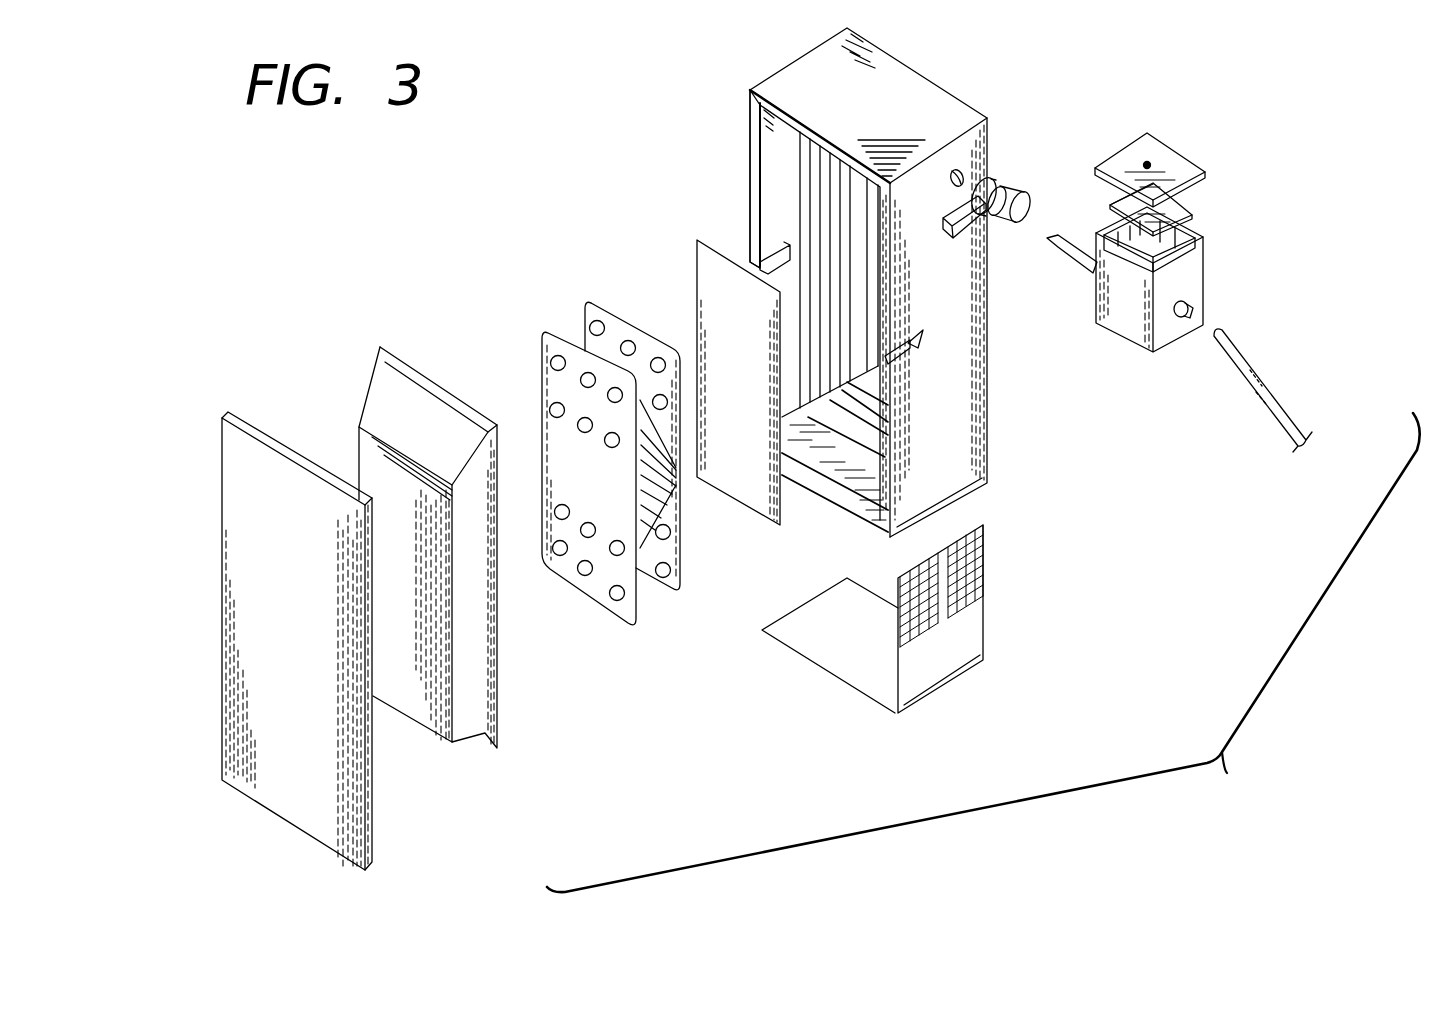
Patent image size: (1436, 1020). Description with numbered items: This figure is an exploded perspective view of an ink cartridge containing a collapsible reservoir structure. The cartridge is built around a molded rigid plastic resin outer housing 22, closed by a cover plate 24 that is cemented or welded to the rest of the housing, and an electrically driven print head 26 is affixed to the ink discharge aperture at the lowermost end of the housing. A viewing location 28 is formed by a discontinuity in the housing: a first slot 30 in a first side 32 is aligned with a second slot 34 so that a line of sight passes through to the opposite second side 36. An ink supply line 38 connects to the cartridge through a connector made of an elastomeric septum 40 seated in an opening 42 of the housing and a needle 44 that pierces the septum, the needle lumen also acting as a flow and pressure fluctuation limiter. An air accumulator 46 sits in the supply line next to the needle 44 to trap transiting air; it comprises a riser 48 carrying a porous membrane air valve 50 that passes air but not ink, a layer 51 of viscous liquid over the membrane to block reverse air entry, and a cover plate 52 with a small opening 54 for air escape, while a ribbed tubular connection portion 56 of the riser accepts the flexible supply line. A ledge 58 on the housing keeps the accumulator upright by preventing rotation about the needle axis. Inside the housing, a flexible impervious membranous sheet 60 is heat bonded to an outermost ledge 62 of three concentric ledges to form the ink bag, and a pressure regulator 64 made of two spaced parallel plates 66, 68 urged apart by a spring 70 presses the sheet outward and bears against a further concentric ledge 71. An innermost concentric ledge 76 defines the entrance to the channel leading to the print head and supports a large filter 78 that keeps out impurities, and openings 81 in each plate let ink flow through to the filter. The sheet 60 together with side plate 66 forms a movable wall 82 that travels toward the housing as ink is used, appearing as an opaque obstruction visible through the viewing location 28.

The outer housing 22 is at (874, 287).
The cover plate 24 is at (228, 440).
The print head 26 is at (978, 620).
The viewing location 28 is at (913, 362).
The first slot 30 is at (917, 342).
The first side 32 is at (977, 445).
The second slot 34 is at (770, 258).
The second side 36 is at (750, 118).
The ink supply line 38 is at (1278, 405).
The septum 40 is at (1015, 192).
The opening 42 is at (954, 172).
The needle 44 is at (1063, 252).
The air accumulator 46 is at (1195, 275).
The riser 48 is at (1207, 262).
The air valve 50 is at (1197, 208).
The layer of liquid 51 is at (1120, 200).
The cover plate 52 is at (1172, 143).
The opening 54 is at (1147, 162).
The ribbed tubular connection portion 56 is at (1190, 318).
The ledge 58 is at (955, 213).
The membranous sheet 60 is at (378, 400).
The outermost ledge 62 is at (845, 440).
The pressure regulator 64 is at (623, 469).
The side plate 66 is at (545, 330).
The side plate 68 is at (590, 300).
The spring 70 is at (663, 507).
The concentric ledge 71 is at (875, 427).
The innermost concentric ledge 76 is at (875, 392).
The filter 78 is at (700, 255).
The openings 81 is at (657, 358).
The movable wall 82 is at (340, 589).